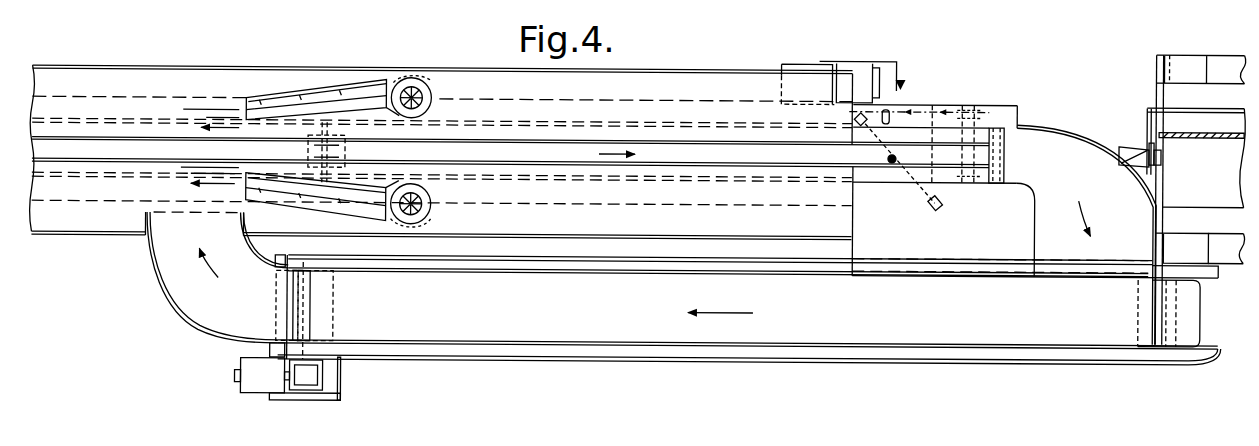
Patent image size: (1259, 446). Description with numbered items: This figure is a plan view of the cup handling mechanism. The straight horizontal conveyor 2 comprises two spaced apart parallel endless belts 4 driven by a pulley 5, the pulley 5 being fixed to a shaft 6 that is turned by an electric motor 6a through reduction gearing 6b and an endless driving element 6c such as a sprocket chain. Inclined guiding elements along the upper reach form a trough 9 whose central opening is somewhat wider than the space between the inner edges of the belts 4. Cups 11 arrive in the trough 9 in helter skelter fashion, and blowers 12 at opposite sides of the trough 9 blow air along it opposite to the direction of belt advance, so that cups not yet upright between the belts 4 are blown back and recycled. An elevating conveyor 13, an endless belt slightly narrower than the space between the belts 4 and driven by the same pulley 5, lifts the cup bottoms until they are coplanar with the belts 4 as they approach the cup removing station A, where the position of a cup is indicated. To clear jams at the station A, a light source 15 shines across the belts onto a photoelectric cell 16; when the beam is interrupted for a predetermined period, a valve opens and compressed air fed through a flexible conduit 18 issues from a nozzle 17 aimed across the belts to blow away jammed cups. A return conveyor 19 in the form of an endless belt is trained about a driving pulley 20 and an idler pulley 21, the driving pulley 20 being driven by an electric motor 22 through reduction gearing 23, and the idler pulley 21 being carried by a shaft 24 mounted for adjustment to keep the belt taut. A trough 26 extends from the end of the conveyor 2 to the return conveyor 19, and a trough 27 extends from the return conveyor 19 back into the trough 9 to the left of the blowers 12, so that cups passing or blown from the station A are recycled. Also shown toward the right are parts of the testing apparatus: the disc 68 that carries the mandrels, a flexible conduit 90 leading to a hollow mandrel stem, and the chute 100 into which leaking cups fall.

The conveyor 2 is at (100, 61).
The trough 9 is at (165, 76).
The endless belts 4 is at (125, 155).
The blowers 12 is at (428, 96).
The elevating conveyor 13 is at (498, 145).
The pulley 5 is at (937, 122).
The shaft 6 is at (975, 98).
The electric motor 6a is at (795, 62).
The reduction gearing 6b is at (860, 62).
The endless driving element 6c is at (938, 100).
The photoelectric cell 16 is at (856, 114).
The nozzle 17 is at (889, 103).
The flexible conduit 18 is at (891, 104).
The light source 15 is at (936, 201).
The cup removing station A is at (890, 156).
The trough 26 is at (1136, 238).
The chute 100 is at (1147, 110).
The flexible conduit 90 is at (1163, 149).
The disc 68 is at (1222, 127).
The cups 11 is at (1125, 150).
The idler pulley 21 is at (1140, 289).
The shaft 24 is at (1166, 302).
The return conveyor 19 is at (795, 318).
The trough 27 is at (210, 291).
The driving pulley 20 is at (335, 316).
The electric motor 22 is at (258, 380).
The reduction gearing 23 is at (312, 376).